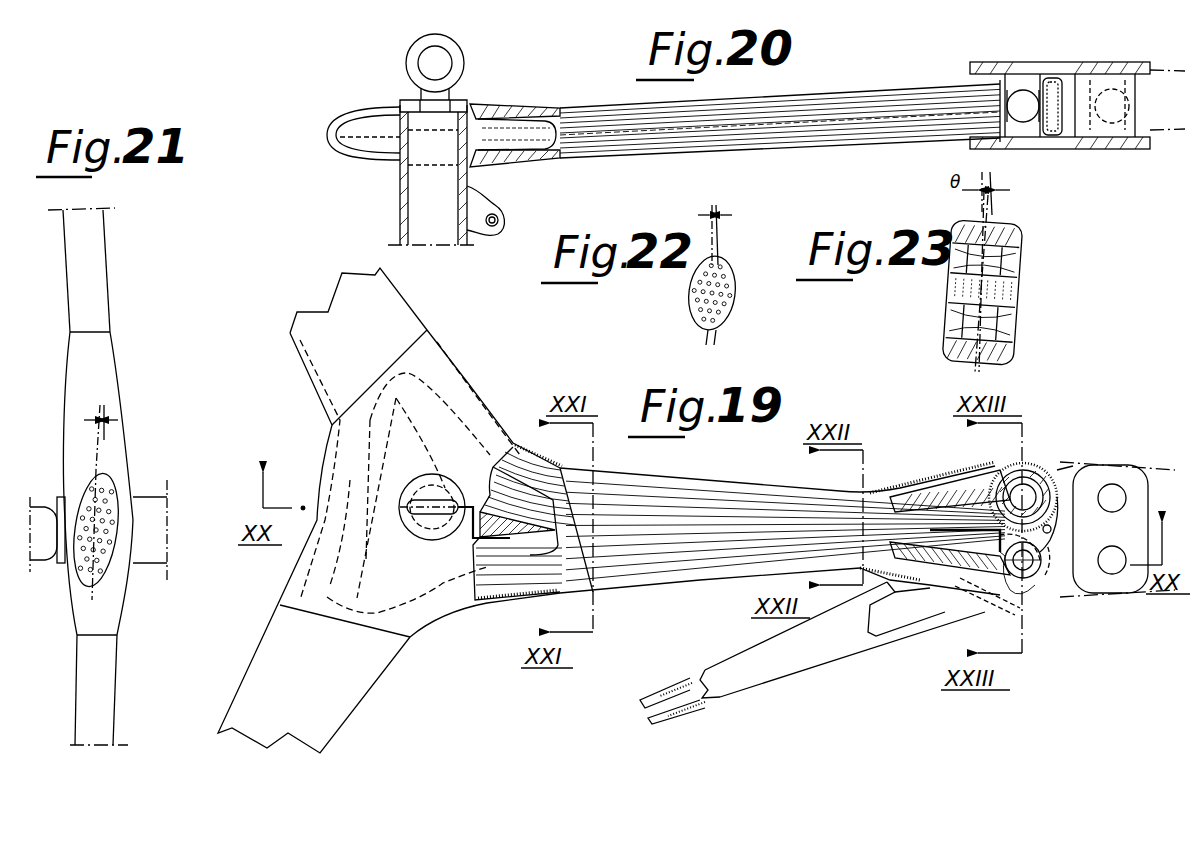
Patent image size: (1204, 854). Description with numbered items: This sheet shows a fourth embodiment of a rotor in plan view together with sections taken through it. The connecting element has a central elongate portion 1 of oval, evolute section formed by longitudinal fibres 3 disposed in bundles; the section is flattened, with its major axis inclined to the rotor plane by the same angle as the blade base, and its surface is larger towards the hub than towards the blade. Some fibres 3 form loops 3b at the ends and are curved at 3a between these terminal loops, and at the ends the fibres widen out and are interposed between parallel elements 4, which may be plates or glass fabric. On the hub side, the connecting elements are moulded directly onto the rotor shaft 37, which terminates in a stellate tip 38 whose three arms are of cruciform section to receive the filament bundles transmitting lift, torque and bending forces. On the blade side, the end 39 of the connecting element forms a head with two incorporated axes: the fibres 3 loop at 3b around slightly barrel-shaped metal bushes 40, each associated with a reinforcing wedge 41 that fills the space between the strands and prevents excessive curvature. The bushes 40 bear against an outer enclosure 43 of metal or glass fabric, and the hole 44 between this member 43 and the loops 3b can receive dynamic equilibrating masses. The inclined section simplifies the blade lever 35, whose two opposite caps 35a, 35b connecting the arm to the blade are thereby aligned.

In FIG. 21, the central elongate portion 1 is at (105, 565).
In FIG. 20, the central elongate portion 1 is at (663, 139).
In FIG. 22, the central elongate portion 1 is at (728, 272).
In FIG. 19, the central elongate portion 1 is at (782, 519).
In FIG. 20, the longitudinal fibres 3 is at (785, 118).
In FIG. 22, the longitudinal fibres 3 is at (726, 310).
In FIG. 19, the longitudinal fibres 3 is at (805, 505).
In FIG. 19, the curved portion of fibres 3a is at (535, 470).
In FIG. 20, the fibre loops 3b is at (1068, 135).
In FIG. 23, the fibre loops 3b is at (1012, 228).
In FIG. 19, the fibre loops 3b is at (1038, 580).
In FIG. 19, the parallel elements 4 is at (1062, 472).
In FIG. 19, the blade lever 35 is at (783, 670).
In FIG. 19, the cap 35a is at (1025, 497).
In FIG. 20, the cap 35b is at (1078, 72).
In FIG. 19, the cap 35b is at (1112, 498).
In FIG. 20, the rotor shaft 37 is at (470, 175).
In FIG. 20, the stellate tip 38 is at (505, 135).
In FIG. 19, the blade-side end 39 is at (921, 565).
In FIG. 20, the metal bush 40 is at (1030, 135).
In FIG. 19, the metal bush 40 is at (1025, 568).
In FIG. 19, the wedge 41 is at (972, 500).
In FIG. 19, the outer enclosure 43 is at (932, 482).
In FIG. 19, the hole 44 is at (1062, 530).